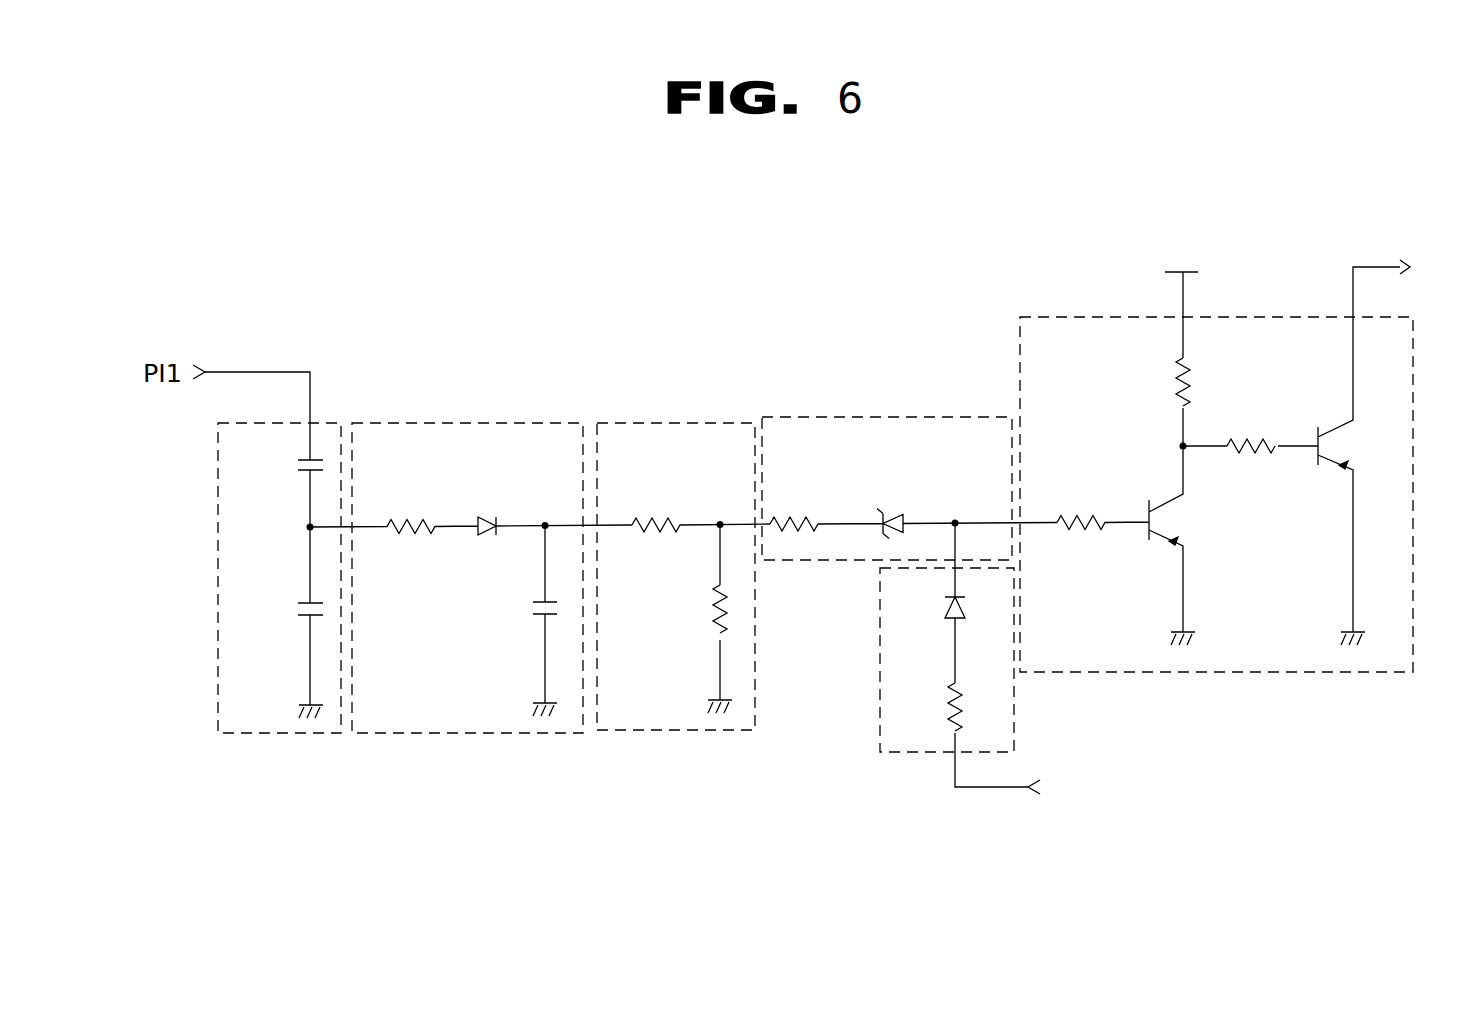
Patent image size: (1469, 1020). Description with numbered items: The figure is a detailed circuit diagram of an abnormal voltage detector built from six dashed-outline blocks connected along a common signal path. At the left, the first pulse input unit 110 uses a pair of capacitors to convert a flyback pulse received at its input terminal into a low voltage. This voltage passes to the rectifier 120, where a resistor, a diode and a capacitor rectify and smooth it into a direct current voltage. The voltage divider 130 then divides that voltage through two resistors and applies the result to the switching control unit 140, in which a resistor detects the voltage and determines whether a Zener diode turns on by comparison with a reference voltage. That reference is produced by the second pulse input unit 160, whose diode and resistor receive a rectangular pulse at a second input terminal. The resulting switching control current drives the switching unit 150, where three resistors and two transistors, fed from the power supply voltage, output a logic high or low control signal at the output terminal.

The first pulse input unit 110 is at (332, 422).
The rectifier 120 is at (477, 421).
The voltage divider 130 is at (655, 421).
The switching control unit 140 is at (887, 417).
The switching unit 150 is at (1217, 673).
The second pulse input unit 160 is at (880, 660).